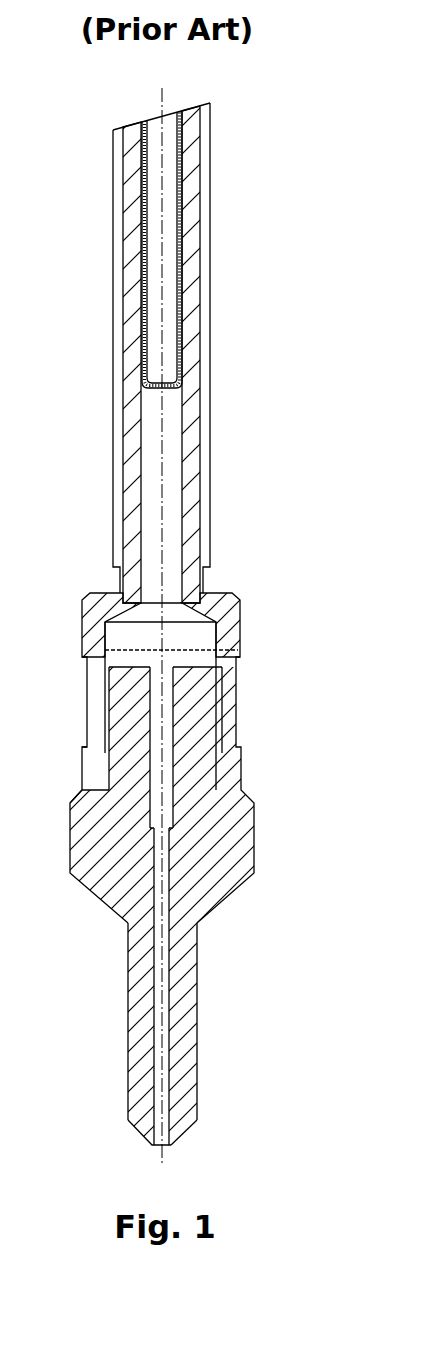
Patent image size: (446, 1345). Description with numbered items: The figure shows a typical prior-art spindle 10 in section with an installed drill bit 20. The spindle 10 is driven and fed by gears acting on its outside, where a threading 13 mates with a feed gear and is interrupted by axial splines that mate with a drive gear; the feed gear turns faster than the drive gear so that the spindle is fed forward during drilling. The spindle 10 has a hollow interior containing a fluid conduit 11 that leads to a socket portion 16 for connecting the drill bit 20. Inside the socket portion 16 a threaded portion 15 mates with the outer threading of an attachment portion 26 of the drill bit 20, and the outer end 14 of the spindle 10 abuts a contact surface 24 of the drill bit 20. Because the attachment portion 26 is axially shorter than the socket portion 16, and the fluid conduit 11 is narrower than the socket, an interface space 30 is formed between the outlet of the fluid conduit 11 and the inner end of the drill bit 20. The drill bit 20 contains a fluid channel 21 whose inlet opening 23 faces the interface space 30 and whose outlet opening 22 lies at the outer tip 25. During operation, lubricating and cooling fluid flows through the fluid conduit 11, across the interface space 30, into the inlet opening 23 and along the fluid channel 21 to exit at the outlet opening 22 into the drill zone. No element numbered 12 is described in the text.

The spindle 10 is at (190, 283).
The fluid conduit 11 is at (175, 493).
The inner lining 12 is at (177, 217).
The threading 13 is at (205, 387).
The outer end 14 is at (240, 782).
The threaded portion 15 is at (100, 682).
The socket portion 16 is at (222, 708).
The drill bit 20 is at (215, 885).
The fluid channel 21 is at (178, 820).
The outlet opening 22 is at (170, 1140).
The inlet opening 23 is at (167, 673).
The contact surface 24 is at (80, 800).
The outer tip 25 is at (140, 1133).
The attachment portion 26 is at (130, 707).
The interface space 30 is at (198, 632).